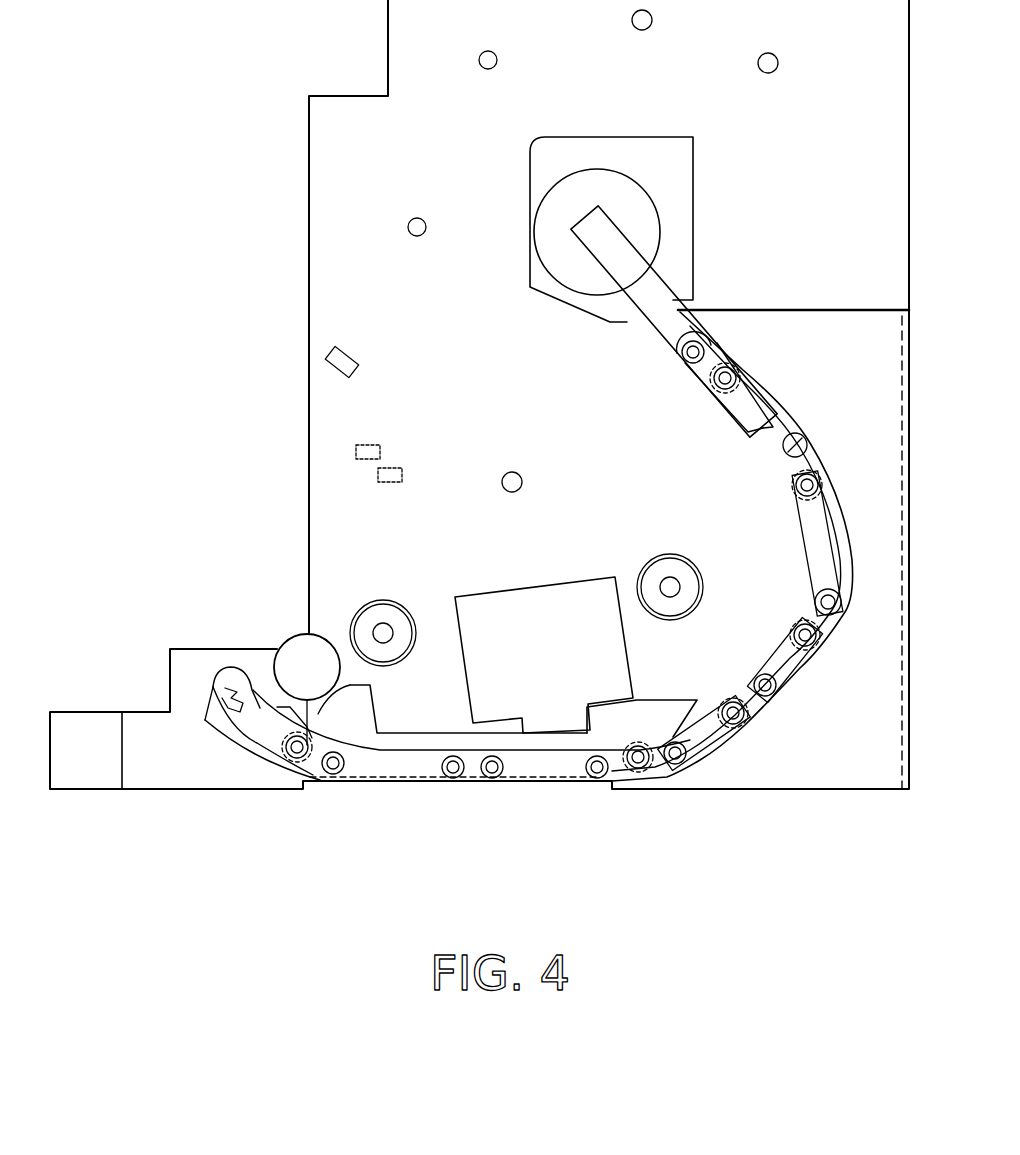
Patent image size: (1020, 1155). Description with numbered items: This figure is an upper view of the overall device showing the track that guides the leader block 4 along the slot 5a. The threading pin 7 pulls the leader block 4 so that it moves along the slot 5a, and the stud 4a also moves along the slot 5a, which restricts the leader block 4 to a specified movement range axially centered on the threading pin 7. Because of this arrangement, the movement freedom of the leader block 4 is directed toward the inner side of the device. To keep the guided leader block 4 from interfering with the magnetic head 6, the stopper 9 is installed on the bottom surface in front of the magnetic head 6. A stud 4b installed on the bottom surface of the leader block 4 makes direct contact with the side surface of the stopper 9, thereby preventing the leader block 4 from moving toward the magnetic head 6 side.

The slot 5a is at (648, 288).
The threading pin 7 is at (682, 352).
The stud 4a is at (740, 362).
The stud 4b is at (714, 383).
The leader block 4 is at (728, 415).
The magnetic head 6 is at (502, 627).
The stopper 9 is at (637, 720).